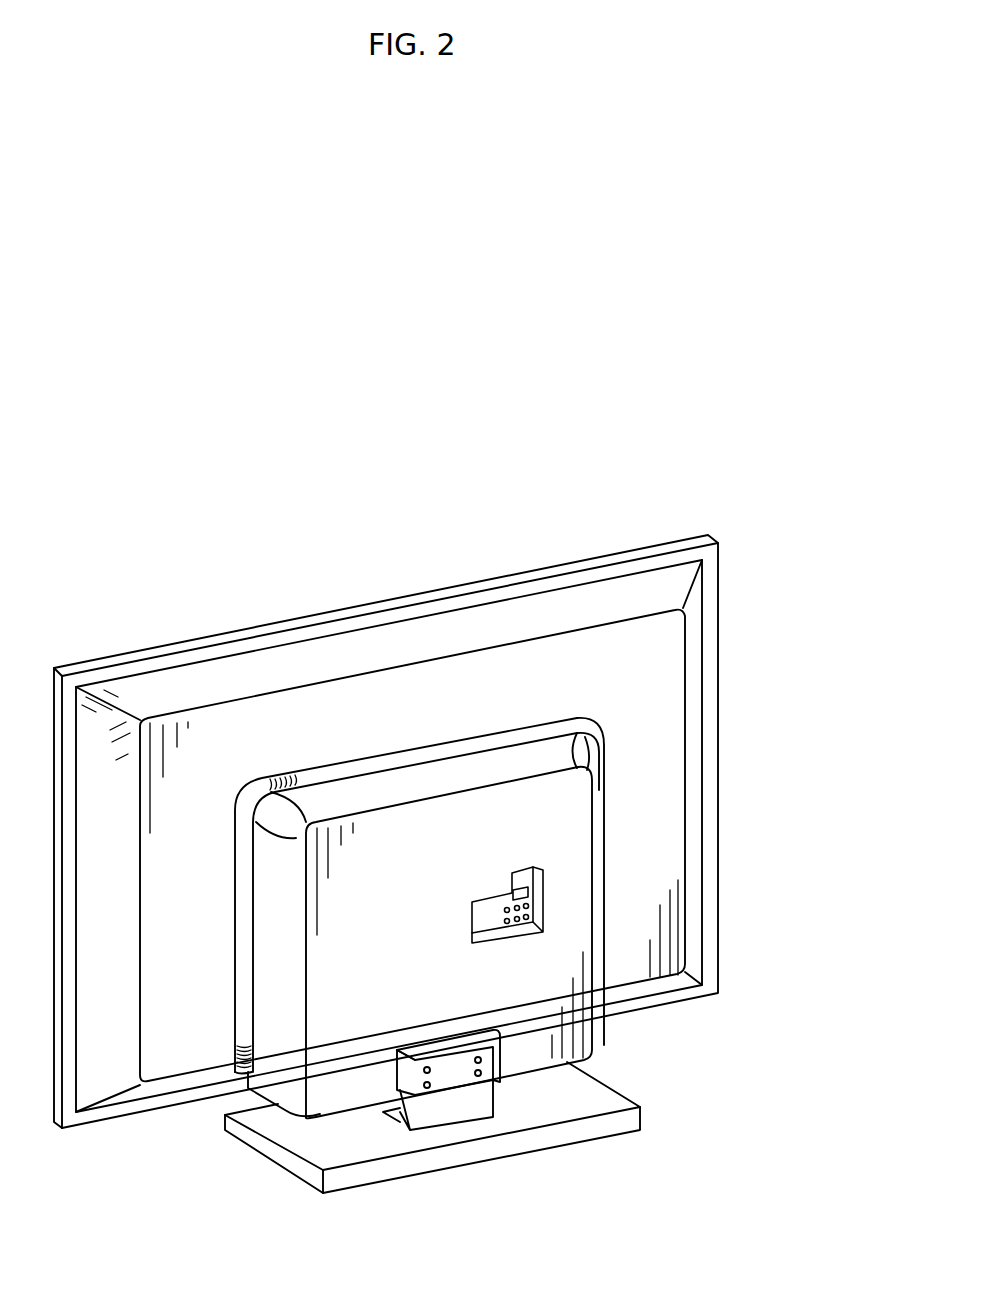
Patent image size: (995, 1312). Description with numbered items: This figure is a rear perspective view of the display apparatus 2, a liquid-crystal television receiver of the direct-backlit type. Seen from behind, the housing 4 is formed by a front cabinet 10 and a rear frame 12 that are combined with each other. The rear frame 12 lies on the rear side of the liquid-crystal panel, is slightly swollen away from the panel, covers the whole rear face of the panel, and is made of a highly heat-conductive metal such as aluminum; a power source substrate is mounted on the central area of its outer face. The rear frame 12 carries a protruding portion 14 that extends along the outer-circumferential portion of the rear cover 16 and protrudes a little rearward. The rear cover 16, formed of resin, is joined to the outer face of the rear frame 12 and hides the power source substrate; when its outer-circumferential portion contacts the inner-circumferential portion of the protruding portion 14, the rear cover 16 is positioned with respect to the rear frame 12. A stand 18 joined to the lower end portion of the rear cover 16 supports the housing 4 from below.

The display apparatus 2 is at (705, 491).
The housing 4 is at (770, 518).
The front cabinet 10 is at (708, 553).
The rear frame 12 is at (668, 635).
The protruding portion 14 is at (421, 753).
The rear cover 16 is at (542, 812).
The stand 18 is at (585, 1093).